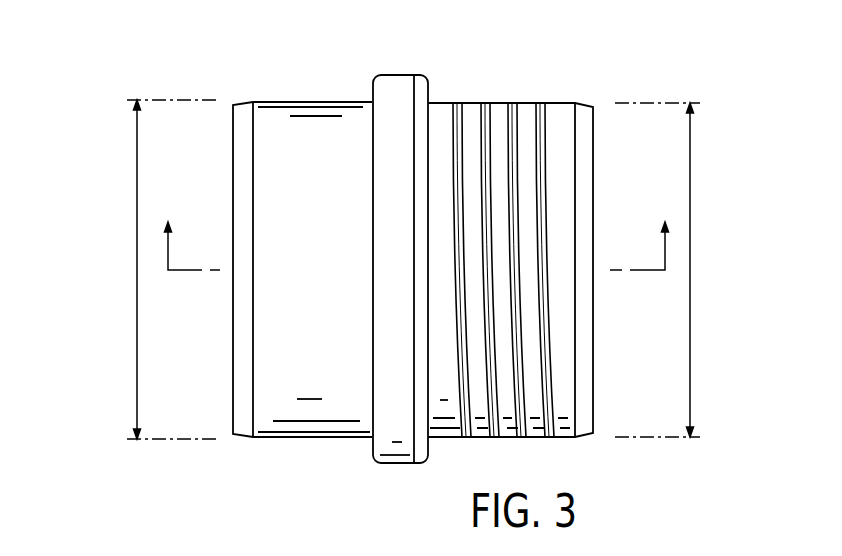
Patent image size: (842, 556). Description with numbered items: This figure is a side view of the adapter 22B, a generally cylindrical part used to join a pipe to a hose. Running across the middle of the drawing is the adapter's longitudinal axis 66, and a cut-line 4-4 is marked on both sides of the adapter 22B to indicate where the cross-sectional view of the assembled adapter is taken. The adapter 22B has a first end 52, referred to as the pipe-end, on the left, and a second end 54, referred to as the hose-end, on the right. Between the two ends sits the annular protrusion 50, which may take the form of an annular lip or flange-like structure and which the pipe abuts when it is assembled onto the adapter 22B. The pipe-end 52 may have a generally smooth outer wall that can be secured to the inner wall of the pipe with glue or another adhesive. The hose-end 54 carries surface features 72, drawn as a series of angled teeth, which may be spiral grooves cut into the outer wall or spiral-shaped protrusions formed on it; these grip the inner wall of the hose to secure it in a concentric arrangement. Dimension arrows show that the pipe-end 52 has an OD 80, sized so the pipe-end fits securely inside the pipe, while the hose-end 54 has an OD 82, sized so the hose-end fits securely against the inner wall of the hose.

The adapter 22B is at (250, 45).
The first end 52 is at (313, 102).
The annular protrusion 50 is at (398, 75).
The second end 54 is at (560, 103).
The surface features 72 is at (511, 101).
The OD of the pipe-end 80 is at (137, 270).
The OD of the hose-end 82 is at (690, 270).
The longitudinal axis 66 is at (184, 270).
The cut-line 4- 4 is at (417, 241).